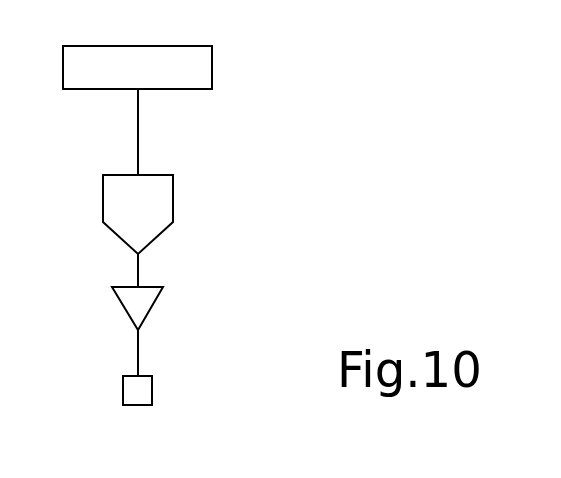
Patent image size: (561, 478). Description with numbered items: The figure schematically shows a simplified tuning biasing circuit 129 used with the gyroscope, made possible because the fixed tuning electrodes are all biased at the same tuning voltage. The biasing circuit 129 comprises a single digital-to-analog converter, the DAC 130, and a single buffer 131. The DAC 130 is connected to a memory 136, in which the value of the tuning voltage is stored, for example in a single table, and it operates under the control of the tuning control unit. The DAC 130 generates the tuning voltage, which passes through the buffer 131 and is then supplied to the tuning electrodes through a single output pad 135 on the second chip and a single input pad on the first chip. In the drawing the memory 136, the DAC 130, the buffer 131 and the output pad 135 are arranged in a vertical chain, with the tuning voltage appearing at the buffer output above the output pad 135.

The biasing circuit 129 is at (233, 113).
The digital-to-analog converter (DAC) 130 is at (107, 175).
The buffer 131 is at (115, 300).
The output pad 135 is at (123, 397).
The memory 136 is at (63, 57).